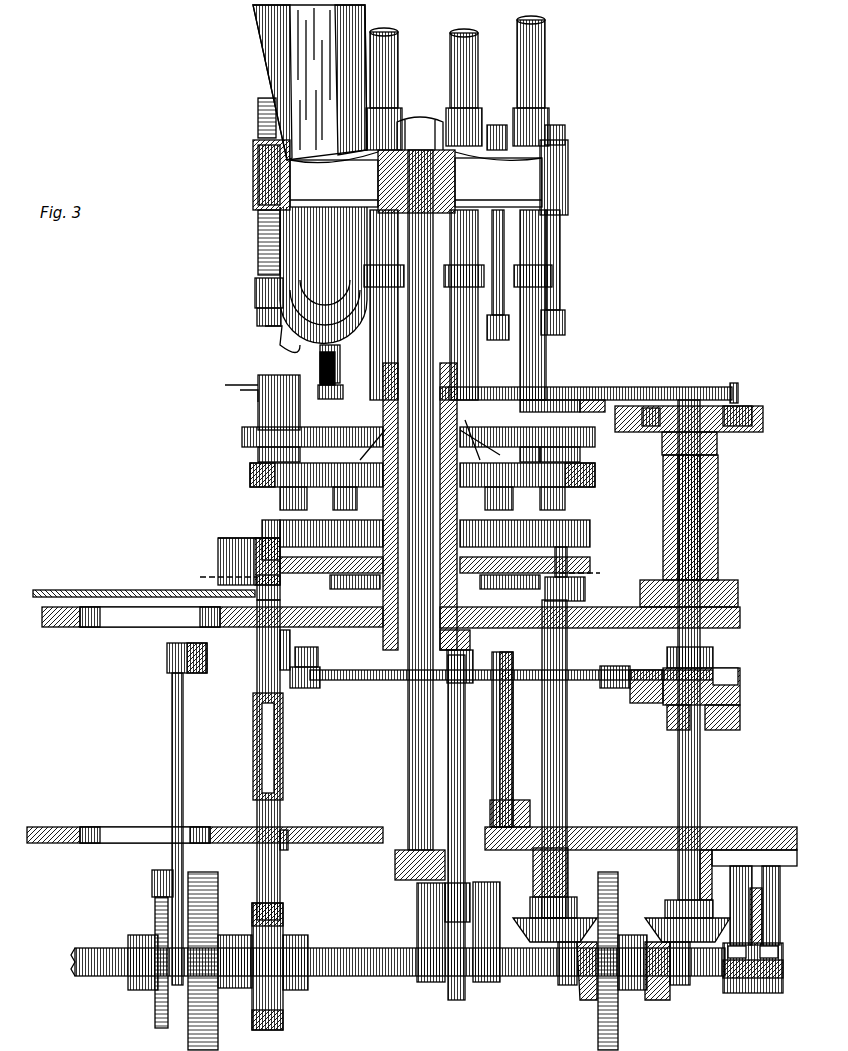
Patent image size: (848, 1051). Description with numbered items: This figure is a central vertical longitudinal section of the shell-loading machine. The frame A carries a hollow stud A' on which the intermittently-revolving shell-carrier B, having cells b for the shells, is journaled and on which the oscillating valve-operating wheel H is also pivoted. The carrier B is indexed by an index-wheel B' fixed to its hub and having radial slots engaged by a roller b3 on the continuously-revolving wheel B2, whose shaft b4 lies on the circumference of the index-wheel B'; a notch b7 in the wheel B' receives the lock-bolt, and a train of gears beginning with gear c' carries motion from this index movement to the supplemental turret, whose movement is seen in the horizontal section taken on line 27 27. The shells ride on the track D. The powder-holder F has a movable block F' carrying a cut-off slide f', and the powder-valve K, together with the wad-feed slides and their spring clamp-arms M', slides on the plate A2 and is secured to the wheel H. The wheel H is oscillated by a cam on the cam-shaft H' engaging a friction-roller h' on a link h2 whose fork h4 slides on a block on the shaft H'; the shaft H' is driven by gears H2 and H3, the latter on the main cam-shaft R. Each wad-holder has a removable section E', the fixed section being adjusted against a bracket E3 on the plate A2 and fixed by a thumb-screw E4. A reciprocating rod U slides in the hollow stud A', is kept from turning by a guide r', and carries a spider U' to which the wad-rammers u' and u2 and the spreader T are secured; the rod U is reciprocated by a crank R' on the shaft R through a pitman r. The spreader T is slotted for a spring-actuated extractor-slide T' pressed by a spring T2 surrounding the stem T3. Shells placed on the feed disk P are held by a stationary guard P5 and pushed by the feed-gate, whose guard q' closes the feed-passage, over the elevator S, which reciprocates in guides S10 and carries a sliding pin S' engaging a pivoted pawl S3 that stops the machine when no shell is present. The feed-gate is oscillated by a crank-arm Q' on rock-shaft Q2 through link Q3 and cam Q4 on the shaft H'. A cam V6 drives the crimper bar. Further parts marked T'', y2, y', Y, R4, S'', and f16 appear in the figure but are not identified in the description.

The powder-holder F is at (310, 174).
The removable section of wad-holder E' is at (470, 208).
The spider U' is at (429, 166).
The reciprocating bar or rod U is at (420, 515).
The stem of the spreader T3 is at (253, 195).
The spring T2 is at (258, 240).
The extractor-slide T' is at (241, 291).
The spreader T is at (240, 318).
The stop arm T'' is at (261, 340).
The movable block F' is at (299, 364).
The powder-valve K is at (282, 402).
The cut-off slide f' is at (274, 383).
The wad-rammer u' is at (543, 232).
The final powder-wad rammer u2 is at (560, 268).
The hollow stud A' is at (414, 516).
The plate A2 is at (242, 437).
The valve-operating wheel H is at (427, 442).
The spring clamp-arm M' is at (526, 455).
The shell-carrier B is at (413, 475).
The cells or holes b is at (280, 498).
The track D is at (606, 524).
The notch b7 is at (262, 545).
The stationary semicircular guard P5 is at (218, 540).
The guard or projection q' is at (249, 561).
The sliding pin S' is at (229, 574).
The section line 27 27 is at (636, 594).
The index-wheel B' is at (453, 573).
The gear c' is at (435, 592).
The roller or projection b3 is at (567, 560).
The continuously-revolving wheel B2 is at (585, 585).
The shell-feed disk P is at (120, 590).
The frame A is at (412, 735).
The elevator or feed-plunger S is at (251, 760).
The guides S10 is at (280, 640).
The pivoted pawl or lever S3 is at (283, 735).
The head y2 is at (192, 673).
The rod y' is at (191, 829).
The crank-arm Q' is at (318, 651).
The rock-shaft Q2 is at (300, 690).
The connecting-link Q3 is at (612, 688).
The cam Q4 is at (740, 695).
The cam-shaft H' is at (689, 659).
The fork h4 is at (740, 406).
The pin or friction-roller h' is at (675, 382).
The link h2 is at (618, 392).
The bracket E3 is at (540, 405).
The set-screw or thumb-screw E4 is at (592, 400).
The pitman or link r is at (459, 825).
The guide r' is at (501, 739).
The shaft b4 is at (567, 757).
The main cam-shaft R is at (424, 964).
The gear Y is at (155, 912).
The gear R4 is at (218, 900).
The gear S'' is at (289, 966).
The crank R' is at (455, 926).
The cam V6 is at (618, 888).
The bevel gear f16 is at (545, 945).
The gear H2 is at (708, 955).
The gear H3 is at (668, 1000).